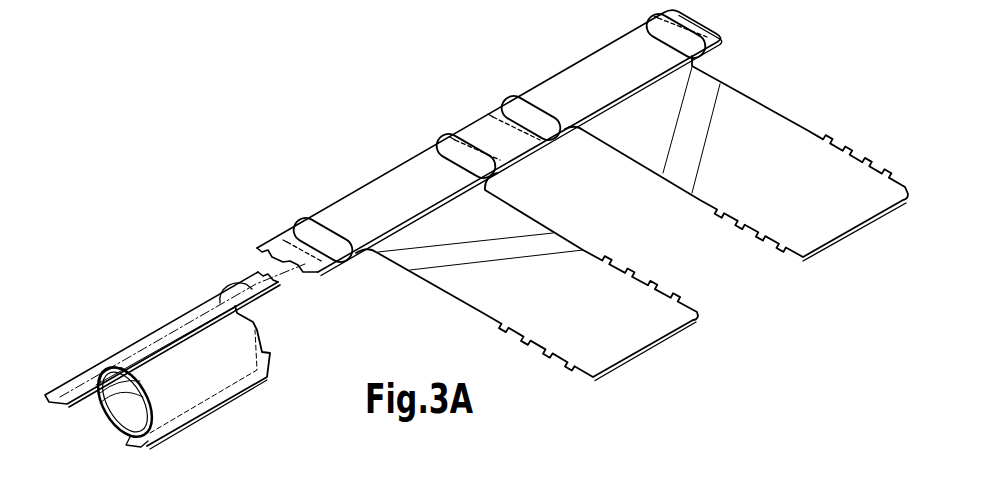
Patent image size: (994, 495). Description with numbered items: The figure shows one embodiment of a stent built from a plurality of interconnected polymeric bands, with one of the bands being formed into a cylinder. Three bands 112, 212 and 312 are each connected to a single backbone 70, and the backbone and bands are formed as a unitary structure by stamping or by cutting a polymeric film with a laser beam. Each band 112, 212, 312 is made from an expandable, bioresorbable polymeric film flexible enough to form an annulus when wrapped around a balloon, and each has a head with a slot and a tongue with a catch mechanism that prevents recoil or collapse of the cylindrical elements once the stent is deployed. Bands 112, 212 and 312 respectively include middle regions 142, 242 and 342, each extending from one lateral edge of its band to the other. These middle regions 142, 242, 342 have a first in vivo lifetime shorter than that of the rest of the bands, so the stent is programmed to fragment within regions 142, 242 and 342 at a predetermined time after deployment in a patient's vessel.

The backbone 70 is at (490, 137).
The band 112 is at (196, 392).
The middle region 142 is at (123, 397).
The band 212 is at (527, 277).
The middle region 242 is at (518, 250).
The band 312 is at (736, 158).
The middle region 342 is at (700, 127).